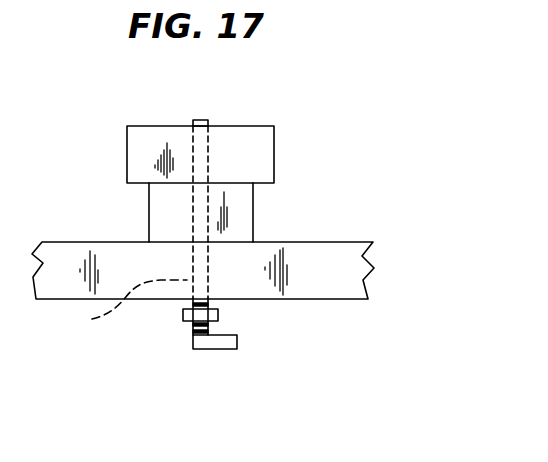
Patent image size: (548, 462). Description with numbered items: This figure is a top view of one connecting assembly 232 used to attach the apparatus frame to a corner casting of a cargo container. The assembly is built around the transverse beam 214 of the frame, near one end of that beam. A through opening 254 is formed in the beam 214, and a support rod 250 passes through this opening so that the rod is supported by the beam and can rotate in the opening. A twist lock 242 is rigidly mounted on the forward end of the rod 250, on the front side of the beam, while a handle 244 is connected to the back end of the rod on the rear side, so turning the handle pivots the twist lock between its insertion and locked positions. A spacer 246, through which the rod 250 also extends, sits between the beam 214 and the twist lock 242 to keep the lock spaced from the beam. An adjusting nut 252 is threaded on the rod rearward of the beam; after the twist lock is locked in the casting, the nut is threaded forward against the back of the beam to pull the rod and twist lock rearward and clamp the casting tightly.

The transverse beam 214 is at (333, 241).
The connecting assembly 232 is at (187, 116).
The twist lock 242 is at (274, 149).
The handle 244 is at (237, 339).
The spacer 246 is at (168, 206).
The support rod 250 is at (208, 304).
The adjusting nut 252 is at (185, 316).
The through opening 254 is at (121, 307).